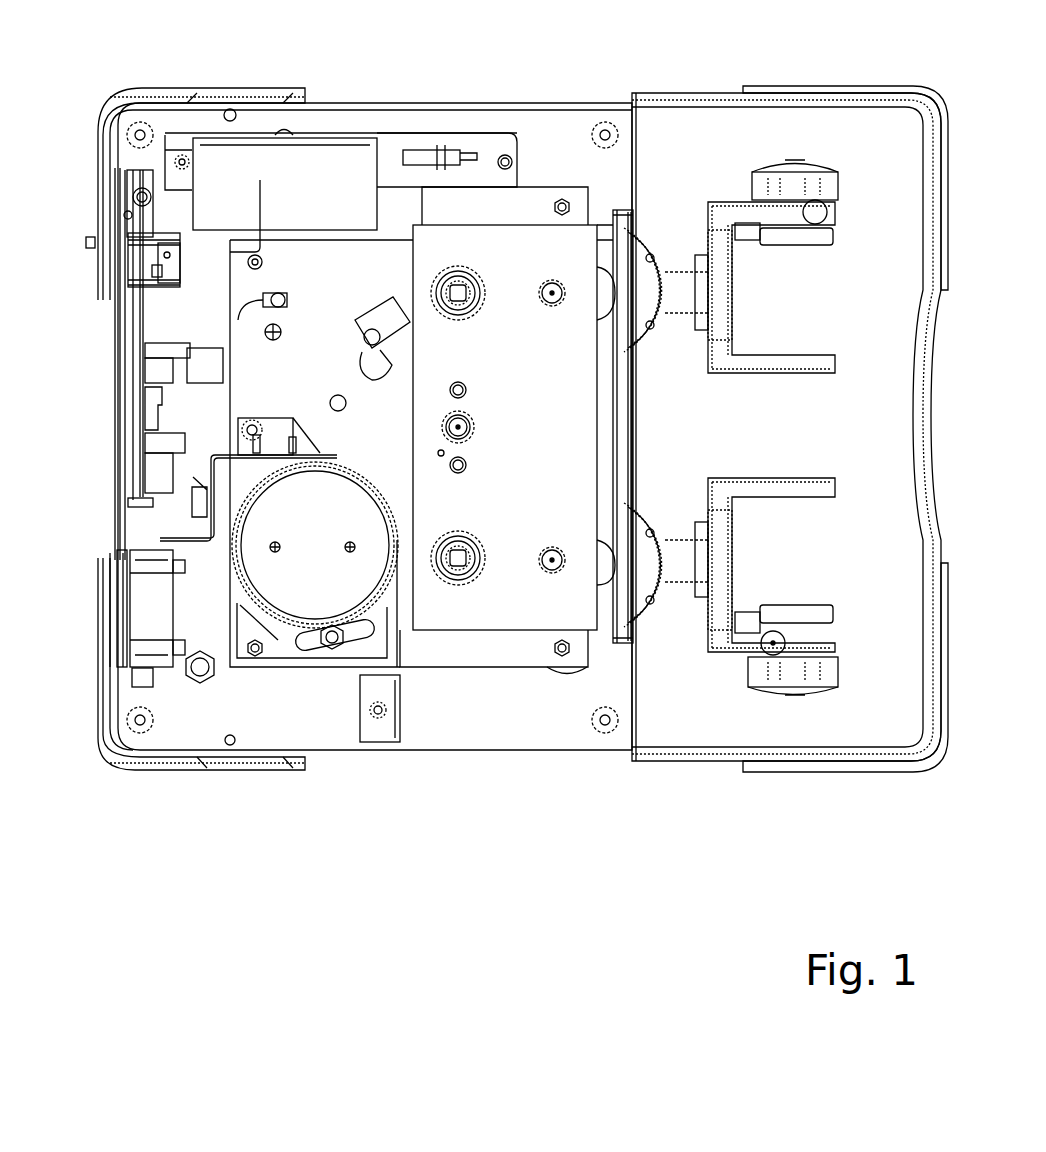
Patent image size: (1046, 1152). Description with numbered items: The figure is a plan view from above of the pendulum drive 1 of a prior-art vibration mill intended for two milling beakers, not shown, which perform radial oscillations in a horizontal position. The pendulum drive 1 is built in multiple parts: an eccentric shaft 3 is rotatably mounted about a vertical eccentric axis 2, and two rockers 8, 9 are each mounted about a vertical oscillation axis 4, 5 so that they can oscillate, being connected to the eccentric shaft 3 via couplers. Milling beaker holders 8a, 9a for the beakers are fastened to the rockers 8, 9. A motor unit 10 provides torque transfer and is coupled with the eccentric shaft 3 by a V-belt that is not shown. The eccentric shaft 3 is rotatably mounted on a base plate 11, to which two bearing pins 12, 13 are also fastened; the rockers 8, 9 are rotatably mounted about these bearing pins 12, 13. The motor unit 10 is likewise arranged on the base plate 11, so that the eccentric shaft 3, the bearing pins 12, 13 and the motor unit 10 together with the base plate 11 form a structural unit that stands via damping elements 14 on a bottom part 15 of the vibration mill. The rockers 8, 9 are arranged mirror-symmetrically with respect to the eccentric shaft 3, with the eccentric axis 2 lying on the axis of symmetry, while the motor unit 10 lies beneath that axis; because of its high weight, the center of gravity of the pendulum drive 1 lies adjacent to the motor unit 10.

The pendulum drive 1 is at (497, 727).
The eccentric axis 2 is at (465, 410).
The eccentric shaft 3 is at (450, 420).
The oscillation axis 4 is at (547, 572).
The oscillation axis 5 is at (552, 280).
The rocker 8 is at (680, 578).
The milling beaker holder 8a is at (720, 620).
The rocker 9 is at (678, 278).
The milling beaker holder 9a is at (720, 230).
The motor unit 10 is at (300, 570).
The base plate 11 is at (477, 650).
The bearing pin 12 is at (615, 645).
The bearing pin 13 is at (600, 222).
The damping element 14 is at (562, 198).
The bottom part 15 is at (347, 723).